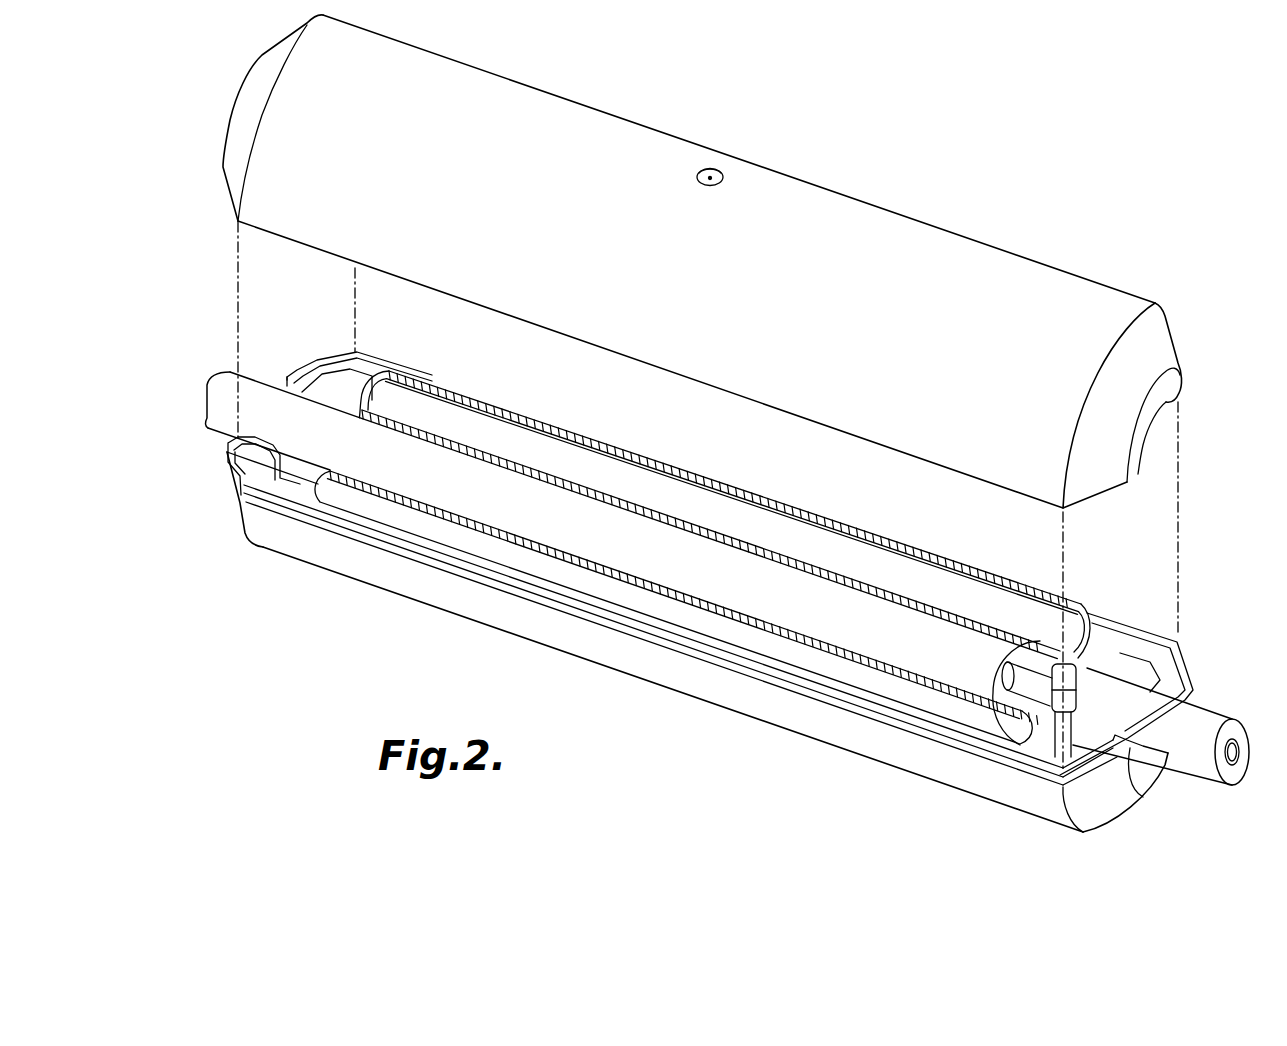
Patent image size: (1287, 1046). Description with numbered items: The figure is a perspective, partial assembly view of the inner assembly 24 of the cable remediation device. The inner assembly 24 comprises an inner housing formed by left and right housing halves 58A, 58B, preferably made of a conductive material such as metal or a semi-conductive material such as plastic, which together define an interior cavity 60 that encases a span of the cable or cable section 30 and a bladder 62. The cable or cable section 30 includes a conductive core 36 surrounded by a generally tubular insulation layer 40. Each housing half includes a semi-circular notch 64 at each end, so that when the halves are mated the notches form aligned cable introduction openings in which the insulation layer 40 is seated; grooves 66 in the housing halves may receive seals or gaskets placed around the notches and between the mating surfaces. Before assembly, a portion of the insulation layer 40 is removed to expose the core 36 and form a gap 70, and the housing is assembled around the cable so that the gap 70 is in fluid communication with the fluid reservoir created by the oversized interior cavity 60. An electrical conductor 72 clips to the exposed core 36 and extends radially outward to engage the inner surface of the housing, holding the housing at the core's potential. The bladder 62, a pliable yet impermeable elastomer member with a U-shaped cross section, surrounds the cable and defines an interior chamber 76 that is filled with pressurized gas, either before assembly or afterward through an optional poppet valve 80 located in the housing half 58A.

The inner assembly 24 is at (696, 261).
The cable or cable section 30 is at (273, 374).
The conductive core 36 is at (1043, 643).
The insulation layer 40 is at (224, 398).
The left housing half 58A is at (230, 117).
The right housing half 58B is at (322, 568).
The interior cavity 60 is at (303, 482).
The bladder 62 is at (367, 383).
The semi-circular notch 64 is at (1150, 423).
The grooves 66 is at (248, 472).
The gap 70 is at (1045, 710).
The electrical conductor 72 is at (1075, 665).
The interior chamber 76 is at (433, 407).
The valve 80 is at (710, 172).